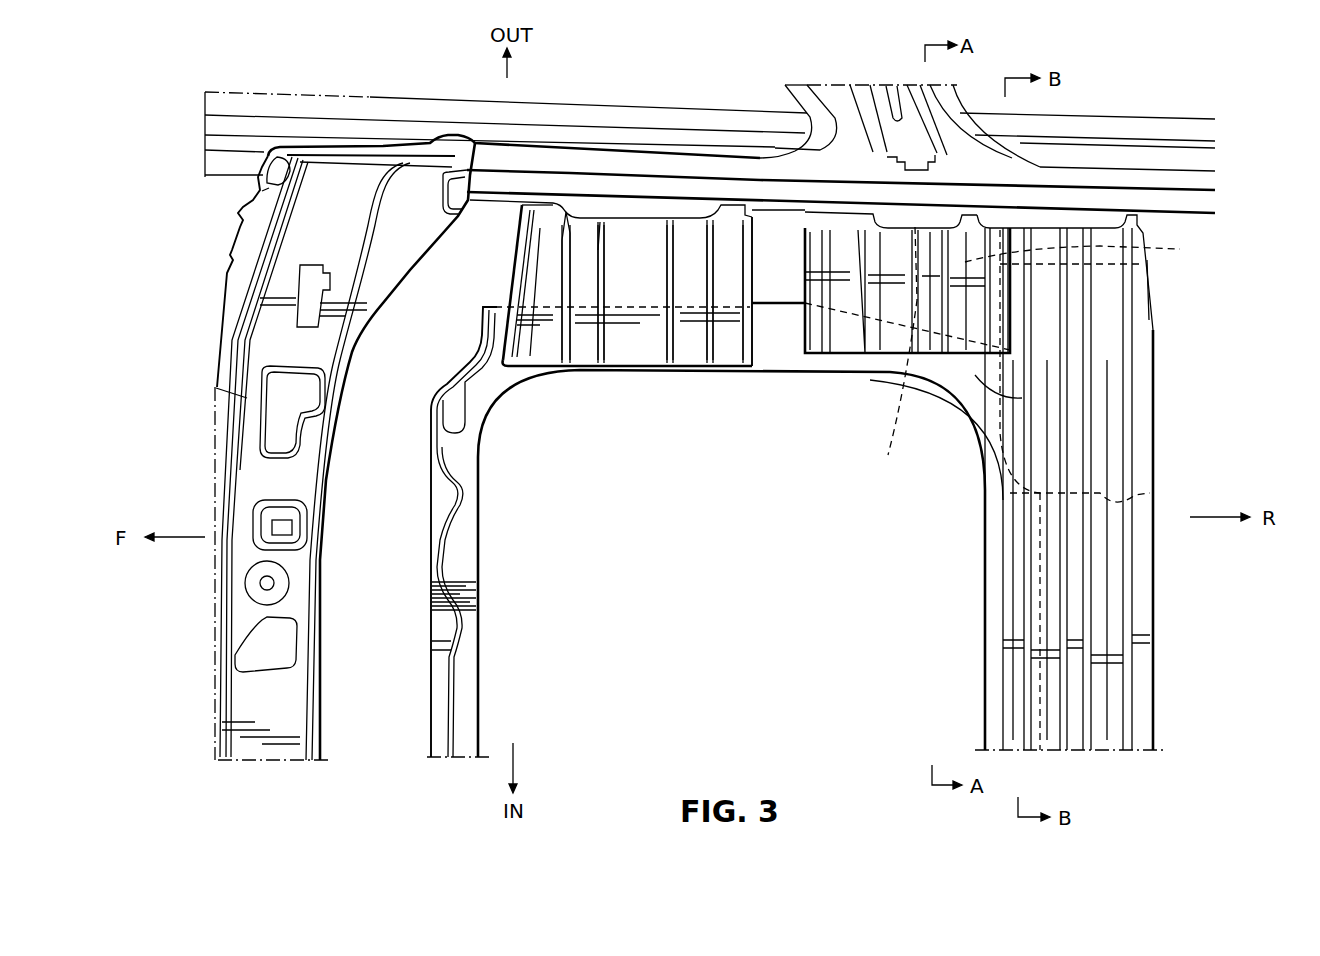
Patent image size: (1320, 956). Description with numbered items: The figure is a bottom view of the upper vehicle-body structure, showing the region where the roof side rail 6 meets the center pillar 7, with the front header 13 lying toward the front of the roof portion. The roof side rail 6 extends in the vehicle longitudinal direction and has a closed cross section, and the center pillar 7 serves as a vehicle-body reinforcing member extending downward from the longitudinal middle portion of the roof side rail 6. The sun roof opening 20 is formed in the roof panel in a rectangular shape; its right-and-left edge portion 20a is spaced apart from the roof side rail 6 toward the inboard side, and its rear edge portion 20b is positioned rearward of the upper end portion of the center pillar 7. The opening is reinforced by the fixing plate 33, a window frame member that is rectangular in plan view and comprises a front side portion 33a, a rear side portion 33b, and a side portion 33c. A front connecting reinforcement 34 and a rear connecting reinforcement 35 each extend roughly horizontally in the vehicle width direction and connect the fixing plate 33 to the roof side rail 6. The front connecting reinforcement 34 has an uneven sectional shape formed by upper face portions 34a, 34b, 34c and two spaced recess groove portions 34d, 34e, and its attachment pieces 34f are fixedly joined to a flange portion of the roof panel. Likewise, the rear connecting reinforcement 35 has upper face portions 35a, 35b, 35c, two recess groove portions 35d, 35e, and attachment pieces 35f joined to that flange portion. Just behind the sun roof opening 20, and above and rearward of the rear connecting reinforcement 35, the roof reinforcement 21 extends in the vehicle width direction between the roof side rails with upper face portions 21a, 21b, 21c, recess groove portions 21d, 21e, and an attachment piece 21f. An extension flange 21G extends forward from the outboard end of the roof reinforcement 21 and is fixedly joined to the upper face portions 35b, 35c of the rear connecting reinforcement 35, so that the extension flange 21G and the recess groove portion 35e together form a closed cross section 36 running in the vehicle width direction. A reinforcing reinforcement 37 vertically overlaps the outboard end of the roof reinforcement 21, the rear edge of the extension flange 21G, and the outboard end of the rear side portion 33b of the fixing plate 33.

The roof side rail 6 is at (580, 109).
The center pillar 7 is at (786, 93).
The front header 13 is at (250, 468).
The sun roof opening 20 is at (736, 624).
The right-and-left edge portion of the sun roof opening 20a is at (776, 374).
The rear edge portion of the sun roof opening 20b is at (985, 578).
The roof reinforcement 21 is at (1157, 611).
The upper face portion of the roof reinforcement 21a is at (1013, 620).
The upper face portion of the roof reinforcement 21b is at (1073, 577).
The upper face portion of the roof reinforcement 21c is at (1143, 590).
The recess groove portion of the roof reinforcement 21d is at (1055, 692).
The recess groove portion of the roof reinforcement 21e is at (1118, 712).
The attachment piece of the roof reinforcement 21f is at (1128, 203).
The front-extension flange portion 21G is at (889, 359).
The fixing plate 33 is at (483, 545).
The front side portion of the fixing plate 33a is at (470, 655).
The rear side portion of the fixing plate 33b is at (990, 677).
The side portion of the fixing plate 33c is at (778, 313).
The front connecting reinforcement 34 is at (510, 256).
The upper face portion of the front connecting reinforcement 34a is at (527, 352).
The upper face portion of the front connecting reinforcement 34b is at (632, 350).
The upper face portion of the front connecting reinforcement 34c is at (723, 352).
The recess groove portion of the front connecting reinforcement 34d is at (586, 357).
The recess groove portion of the front connecting reinforcement 34e is at (690, 352).
The attachment piece of the front connecting reinforcement 34f is at (577, 184).
The rear connecting reinforcement 35 is at (888, 345).
The upper face portion of the rear connecting reinforcement 35a is at (817, 345).
The upper face portion of the rear connecting reinforcement 35b is at (932, 346).
The upper face portion of the rear connecting reinforcement 35c is at (1007, 318).
The recess groove portion of the rear connecting reinforcement 35d is at (880, 347).
The recess groove portion of the rear connecting reinforcement 35e is at (967, 347).
The attachment piece of the rear connecting reinforcement 35f is at (891, 190).
The closed cross section 36 is at (1088, 361).
The reinforcing reinforcement 37 is at (1157, 490).